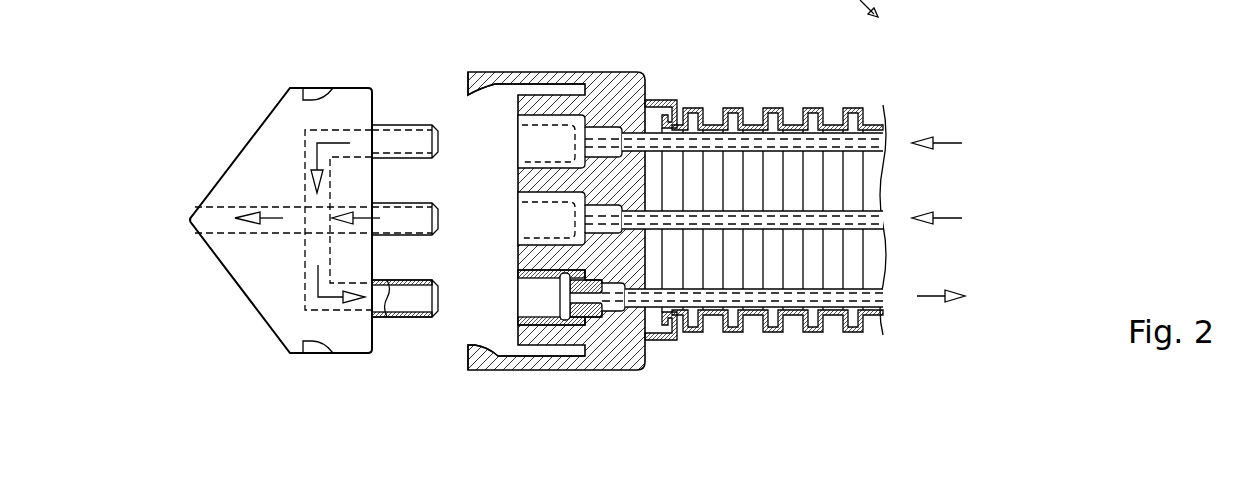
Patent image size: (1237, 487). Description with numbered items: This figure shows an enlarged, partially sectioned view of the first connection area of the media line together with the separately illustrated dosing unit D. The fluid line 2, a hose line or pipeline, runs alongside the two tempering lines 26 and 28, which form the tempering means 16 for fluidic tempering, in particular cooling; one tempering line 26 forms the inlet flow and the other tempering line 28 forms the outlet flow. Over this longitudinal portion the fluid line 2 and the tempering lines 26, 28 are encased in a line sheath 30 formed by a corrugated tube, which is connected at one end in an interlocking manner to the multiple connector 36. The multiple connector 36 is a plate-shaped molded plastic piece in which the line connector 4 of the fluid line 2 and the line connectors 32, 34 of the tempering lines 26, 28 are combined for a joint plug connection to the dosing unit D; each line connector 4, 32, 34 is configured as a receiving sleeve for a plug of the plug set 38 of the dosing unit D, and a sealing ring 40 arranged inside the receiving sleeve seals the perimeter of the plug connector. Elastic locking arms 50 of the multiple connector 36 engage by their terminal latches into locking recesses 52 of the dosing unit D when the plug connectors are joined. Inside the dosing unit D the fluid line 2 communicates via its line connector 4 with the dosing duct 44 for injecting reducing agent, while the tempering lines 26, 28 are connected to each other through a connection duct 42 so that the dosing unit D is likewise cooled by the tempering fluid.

The dosing unit D is at (262, 123).
The locking recesses 52 is at (312, 93).
The connection duct 42 is at (316, 251).
The dosing duct 44 is at (220, 218).
The plug set 38 is at (432, 268).
The multiple connector 36 is at (632, 75).
The elastic locking arms 50 is at (528, 72).
The line connector 32 is at (537, 140).
The line connector 4 is at (537, 223).
The line connector 34 is at (537, 296).
The sealing ring 40 is at (565, 318).
The tempering means 16 is at (697, 130).
The tempering line 26 is at (853, 142).
The tempering line 28 is at (777, 297).
The line sheath 30 is at (853, 330).
The fluid line 2 is at (845, 219).